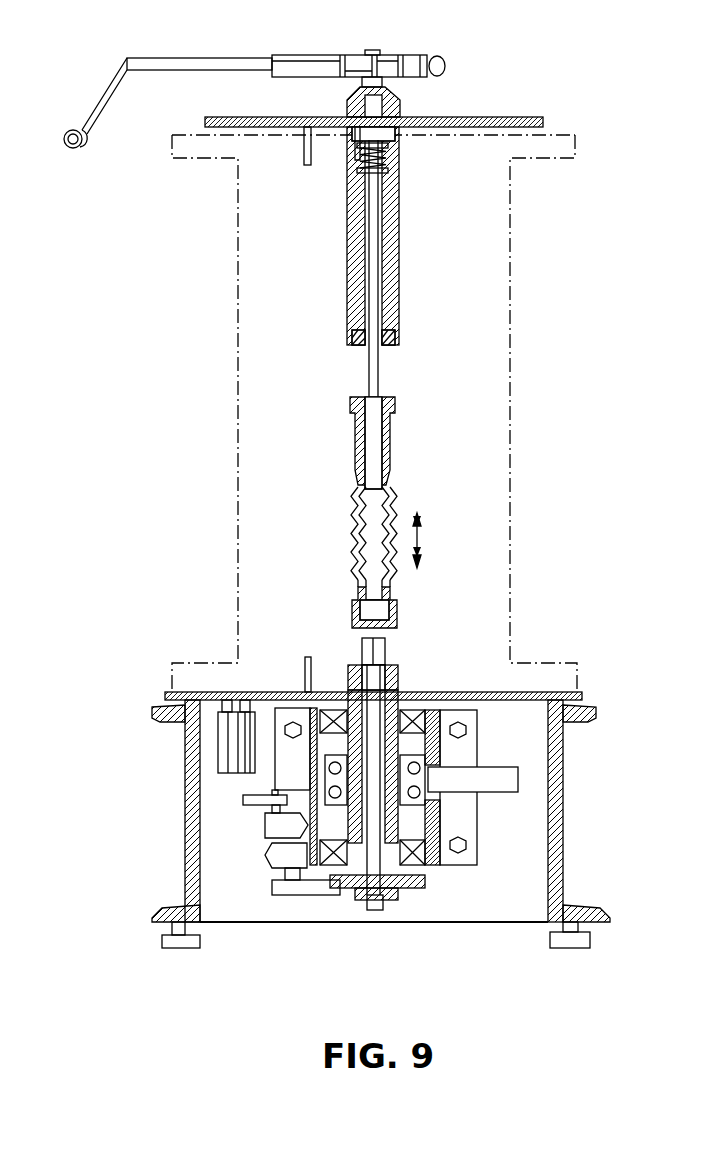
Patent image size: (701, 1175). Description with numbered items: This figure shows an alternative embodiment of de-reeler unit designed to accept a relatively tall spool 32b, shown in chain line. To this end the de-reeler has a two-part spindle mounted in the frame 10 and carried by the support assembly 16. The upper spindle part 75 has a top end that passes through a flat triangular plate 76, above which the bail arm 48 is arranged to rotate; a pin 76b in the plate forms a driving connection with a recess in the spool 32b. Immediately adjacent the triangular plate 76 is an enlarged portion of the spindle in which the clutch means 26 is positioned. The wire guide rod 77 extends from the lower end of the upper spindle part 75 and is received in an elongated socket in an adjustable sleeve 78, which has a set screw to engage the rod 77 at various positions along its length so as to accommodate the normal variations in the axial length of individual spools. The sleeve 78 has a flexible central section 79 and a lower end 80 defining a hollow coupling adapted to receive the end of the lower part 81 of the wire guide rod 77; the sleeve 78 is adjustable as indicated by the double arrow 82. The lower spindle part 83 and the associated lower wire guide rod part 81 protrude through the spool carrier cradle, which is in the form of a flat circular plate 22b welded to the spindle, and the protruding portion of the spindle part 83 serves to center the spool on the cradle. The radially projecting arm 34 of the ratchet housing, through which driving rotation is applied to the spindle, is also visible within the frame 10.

The bail arm 48 is at (185, 57).
The flat triangular plate 76 is at (492, 117).
The pin 76b is at (305, 160).
The clutch means 26 is at (402, 160).
The upper spindle part 75 is at (399, 246).
The tall spool 32b is at (236, 352).
The wire guide rod 77 is at (380, 372).
The adjustable sleeve 78 is at (392, 440).
The flexible central section 79 is at (357, 512).
The double arrow 82 is at (420, 540).
The lower end 80 is at (397, 609).
The lower part of the wire guide rod 81 is at (362, 650).
The flat circular plate 22b is at (168, 696).
The frame 10 is at (185, 780).
The support assembly 16 is at (290, 768).
The radially projecting arm 34 is at (518, 779).
The lower spindle part 83 is at (400, 823).